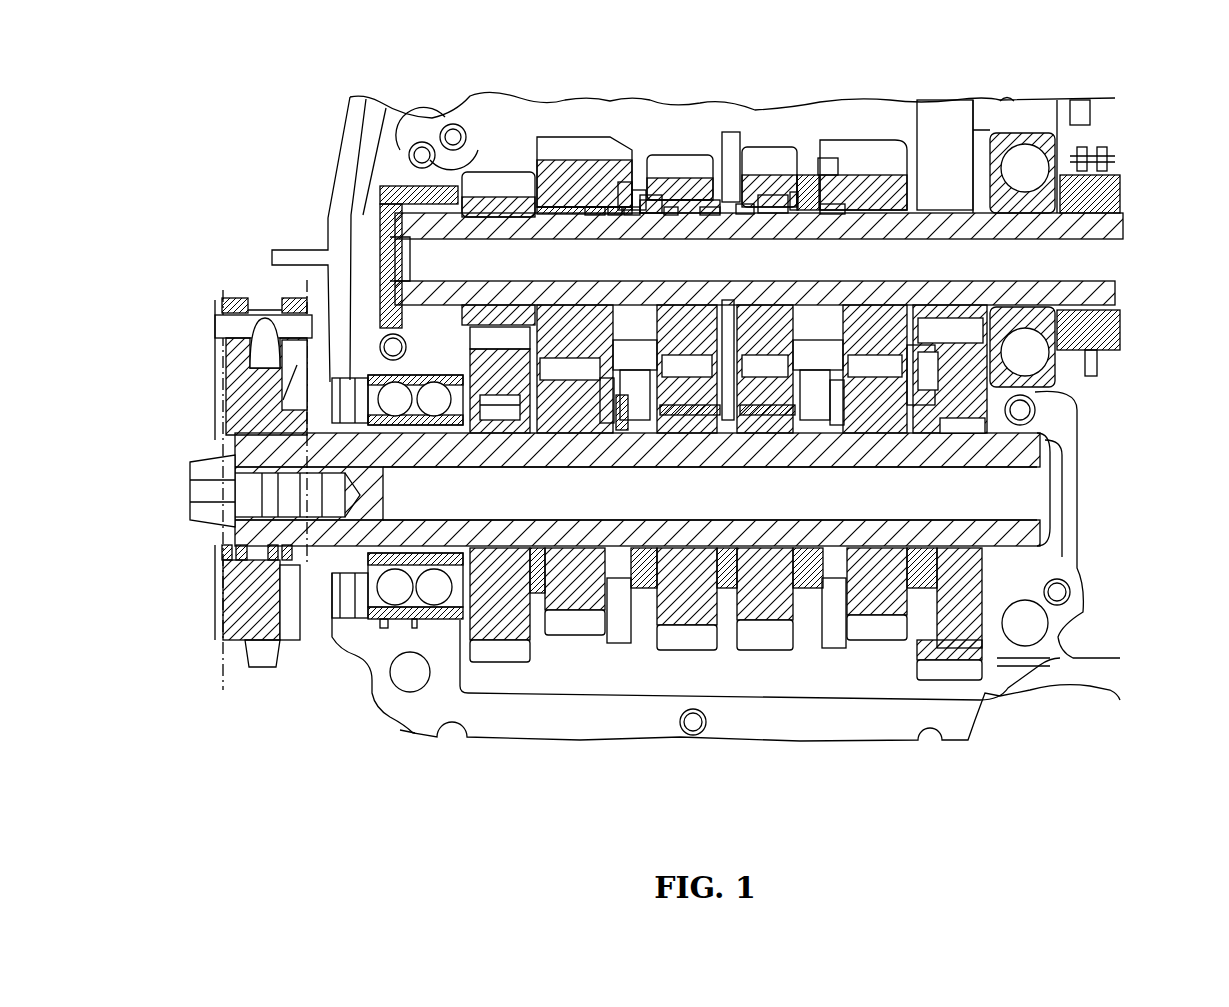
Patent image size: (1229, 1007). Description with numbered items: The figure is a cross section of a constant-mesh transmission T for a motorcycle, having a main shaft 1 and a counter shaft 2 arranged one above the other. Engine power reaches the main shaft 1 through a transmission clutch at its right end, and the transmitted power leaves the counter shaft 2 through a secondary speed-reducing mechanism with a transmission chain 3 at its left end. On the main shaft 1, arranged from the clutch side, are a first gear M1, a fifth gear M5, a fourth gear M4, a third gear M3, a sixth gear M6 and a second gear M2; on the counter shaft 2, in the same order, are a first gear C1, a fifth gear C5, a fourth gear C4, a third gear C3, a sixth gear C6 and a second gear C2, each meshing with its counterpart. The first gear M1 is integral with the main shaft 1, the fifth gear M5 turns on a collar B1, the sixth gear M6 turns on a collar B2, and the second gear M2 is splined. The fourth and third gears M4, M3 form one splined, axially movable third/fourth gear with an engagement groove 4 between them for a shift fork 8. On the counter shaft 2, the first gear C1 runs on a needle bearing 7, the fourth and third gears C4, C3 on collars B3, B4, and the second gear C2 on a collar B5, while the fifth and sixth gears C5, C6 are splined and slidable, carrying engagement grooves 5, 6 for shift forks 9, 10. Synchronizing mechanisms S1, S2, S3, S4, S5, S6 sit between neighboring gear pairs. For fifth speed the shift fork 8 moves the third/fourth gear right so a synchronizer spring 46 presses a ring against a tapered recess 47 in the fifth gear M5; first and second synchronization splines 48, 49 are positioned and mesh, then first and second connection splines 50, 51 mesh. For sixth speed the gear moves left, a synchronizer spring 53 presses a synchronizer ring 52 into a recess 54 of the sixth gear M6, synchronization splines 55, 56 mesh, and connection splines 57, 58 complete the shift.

The constant-mesh transmission T is at (1152, 130).
The main shaft 1 is at (1110, 220).
The counter shaft 2 is at (1032, 522).
The transmission chain 3 is at (225, 348).
The engagement groove 4 is at (705, 312).
The engagement groove 5 is at (838, 412).
The engagement groove 6 is at (615, 412).
The needle bearing 7 is at (968, 450).
The shift fork 8 is at (737, 205).
The shift fork 9 is at (835, 648).
The shift fork 10 is at (618, 640).
The first gear M1 is at (945, 185).
The second gear M2 is at (500, 185).
The third gear M3 is at (683, 170).
The fourth gear M4 is at (764, 160).
The fifth gear M5 is at (872, 158).
The sixth gear M6 is at (576, 150).
The first gear C1 is at (952, 670).
The second gear C2 is at (500, 655).
The third gear C3 is at (678, 645).
The fourth gear C4 is at (768, 640).
The fifth gear C5 is at (875, 635).
The sixth gear C6 is at (575, 620).
The synchronizing mechanism S1 is at (916, 424).
The synchronizing mechanism S2 is at (526, 422).
The synchronizing mechanism S3 is at (650, 427).
The synchronizing mechanism S4 is at (801, 427).
The synchronizing mechanism S5 is at (773, 214).
The synchronizing mechanism S6 is at (662, 214).
The collar B1 is at (906, 215).
The collar B2 is at (553, 216).
The collar B3 is at (770, 428).
The collar B4 is at (684, 432).
The collar B5 is at (484, 430).
The synchronizer spring 46 is at (712, 214).
The recess 47 is at (819, 175).
The first synchronization spline 48 is at (838, 241).
The second synchronization spline 49 is at (745, 213).
The first connection spline 50 is at (836, 182).
The second connection spline 51 is at (796, 193).
The synchronizer ring 52 is at (596, 216).
The synchronizer spring 53 is at (640, 216).
The recess 54 is at (638, 192).
The first synchronization spline 55 is at (618, 216).
The second synchronization spline 56 is at (670, 216).
The first connection spline 57 is at (624, 185).
The second connection spline 58 is at (650, 198).